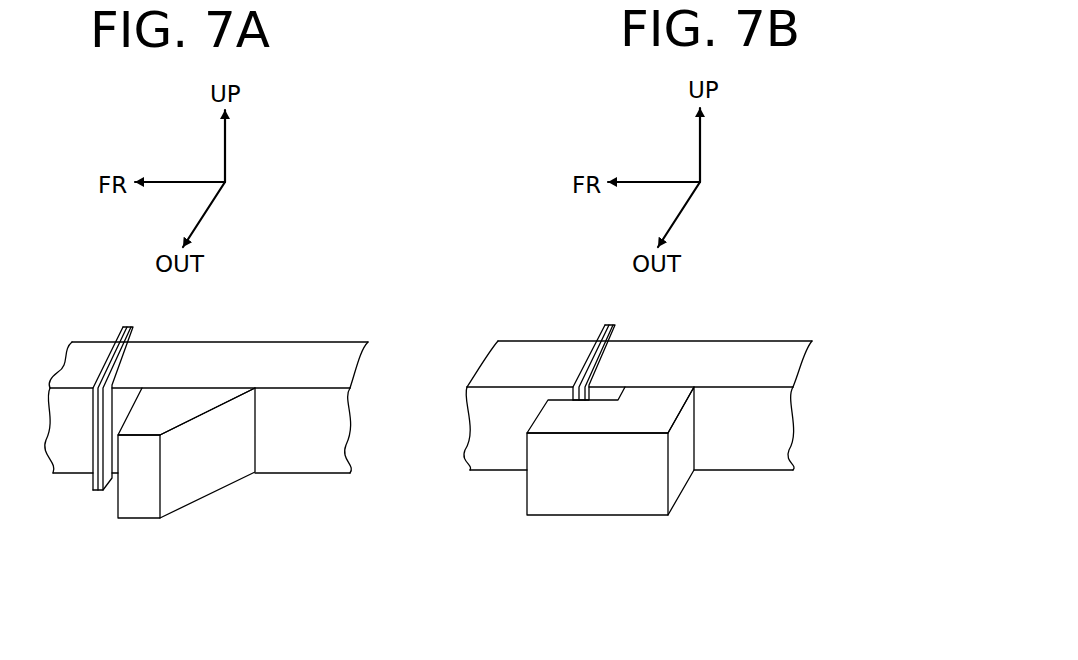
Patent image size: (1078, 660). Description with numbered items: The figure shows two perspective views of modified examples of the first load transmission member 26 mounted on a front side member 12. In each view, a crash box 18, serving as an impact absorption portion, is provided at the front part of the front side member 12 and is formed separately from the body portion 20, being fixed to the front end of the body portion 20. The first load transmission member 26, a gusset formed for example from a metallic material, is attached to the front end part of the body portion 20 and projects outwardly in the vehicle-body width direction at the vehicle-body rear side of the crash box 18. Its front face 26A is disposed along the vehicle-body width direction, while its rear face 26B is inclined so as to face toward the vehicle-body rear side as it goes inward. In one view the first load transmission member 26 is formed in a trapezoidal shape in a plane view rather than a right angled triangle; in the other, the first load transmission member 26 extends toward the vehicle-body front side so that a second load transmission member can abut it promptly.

In FIG. 7A, the front side member 12 is at (257, 332).
In FIG. 7B, the front side member 12 is at (717, 322).
In FIG. 7A, the crash box 18 is at (90, 350).
In FIG. 7B, the crash box 18 is at (550, 353).
In FIG. 7A, the body portion 20 is at (313, 355).
In FIG. 7B, the body portion 20 is at (768, 350).
In FIG. 7A, the first load transmission member 26 is at (169, 493).
In FIG. 7B, the first load transmission member 26 is at (599, 495).
In FIG. 7A, the front face 26A is at (117, 503).
In FIG. 7B, the front face 26A is at (527, 495).
In FIG. 7A, the rear face 26B is at (218, 473).
In FIG. 7B, the rear face 26B is at (677, 475).